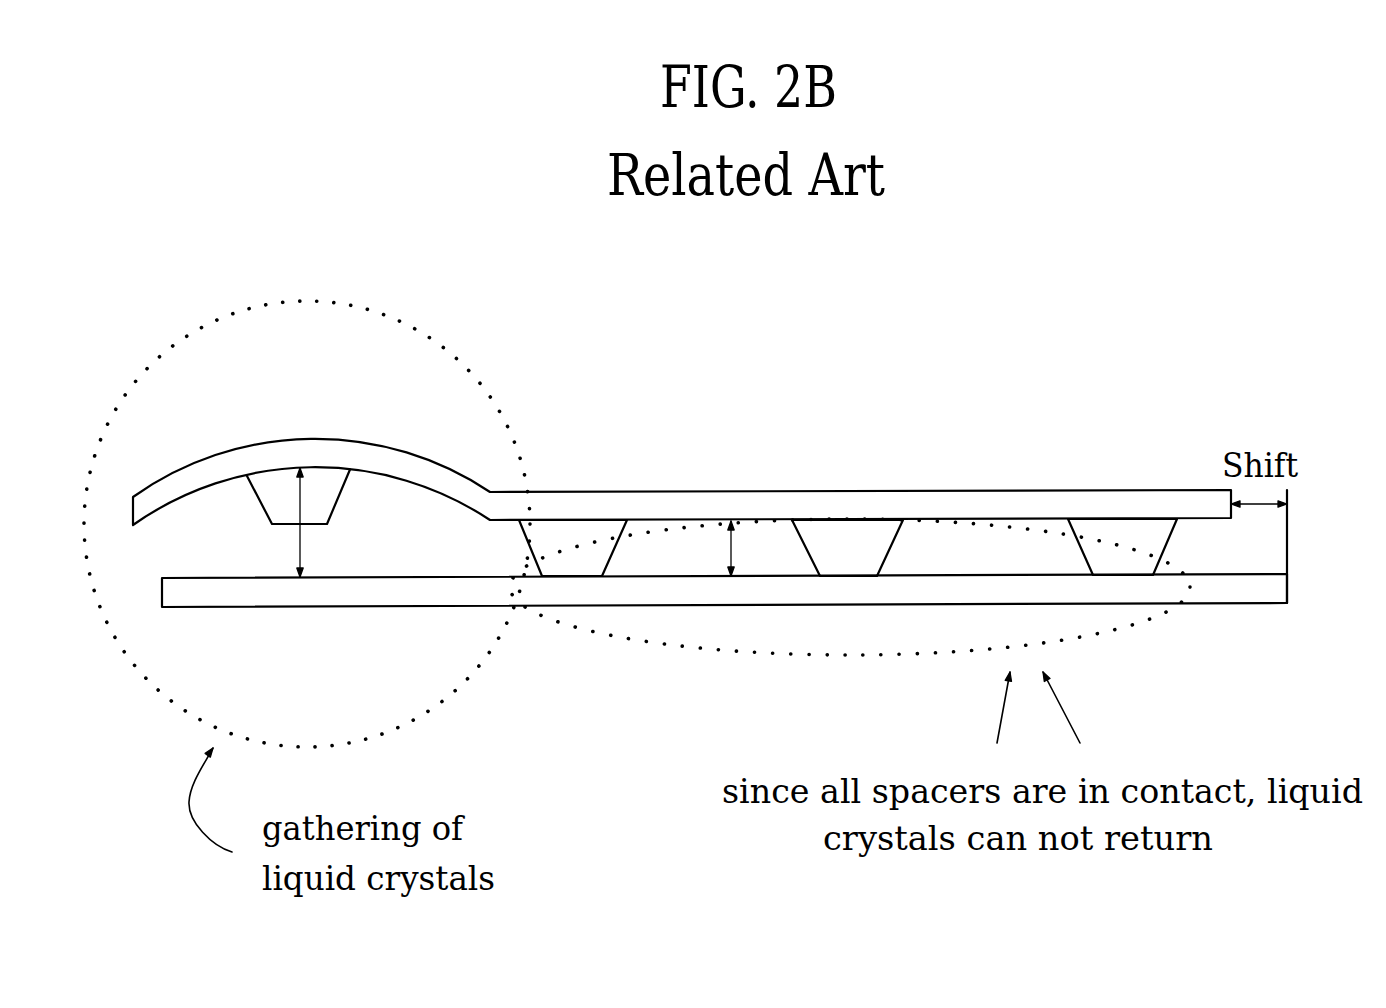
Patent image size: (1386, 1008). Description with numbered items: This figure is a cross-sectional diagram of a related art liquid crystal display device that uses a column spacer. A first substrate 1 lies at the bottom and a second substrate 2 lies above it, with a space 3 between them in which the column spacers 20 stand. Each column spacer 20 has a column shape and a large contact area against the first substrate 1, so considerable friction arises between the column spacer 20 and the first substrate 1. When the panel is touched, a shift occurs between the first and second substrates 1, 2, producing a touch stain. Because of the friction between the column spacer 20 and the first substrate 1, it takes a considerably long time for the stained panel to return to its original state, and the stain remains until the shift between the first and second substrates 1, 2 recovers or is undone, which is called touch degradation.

The first substrate 1 is at (1253, 592).
The second substrate 2 is at (919, 500).
The liquid crystal layer 3 is at (1007, 540).
The column spacer 20 is at (1105, 553).